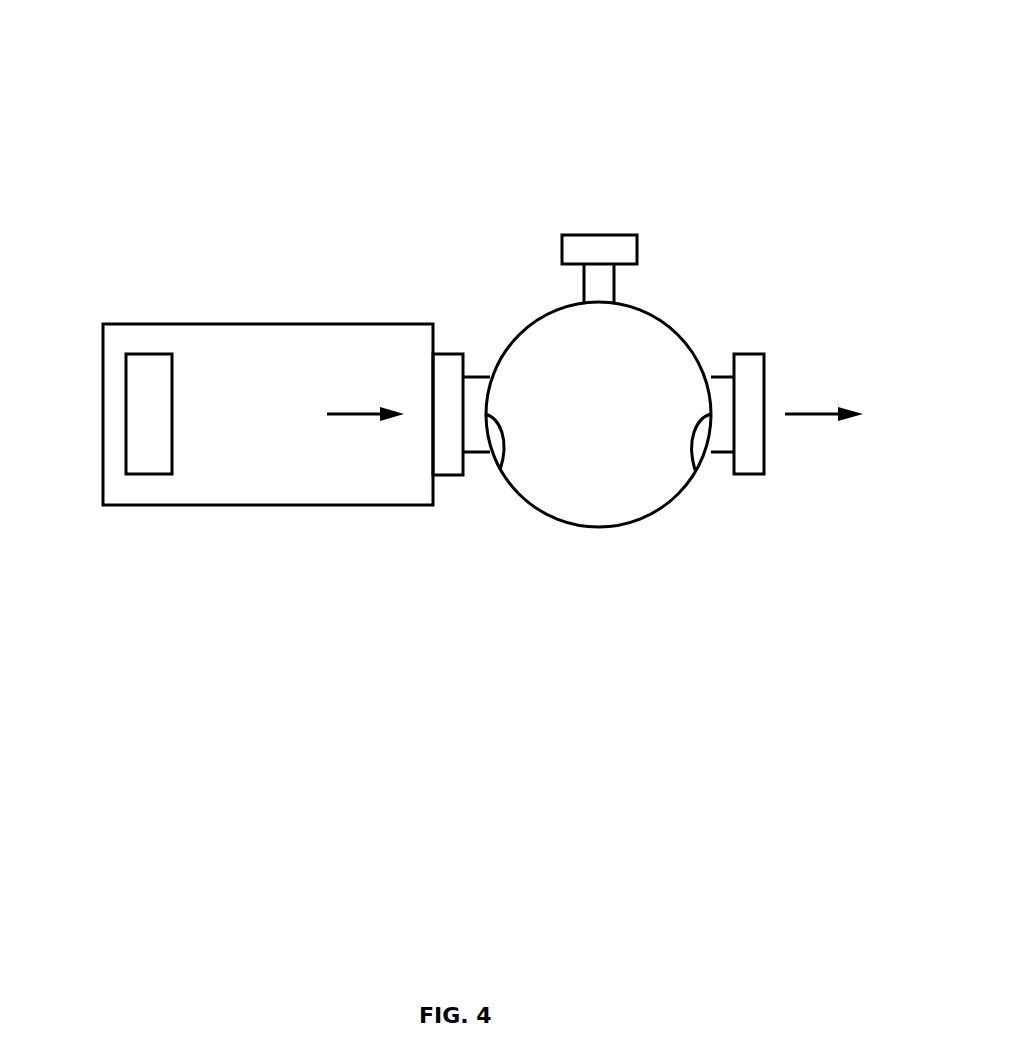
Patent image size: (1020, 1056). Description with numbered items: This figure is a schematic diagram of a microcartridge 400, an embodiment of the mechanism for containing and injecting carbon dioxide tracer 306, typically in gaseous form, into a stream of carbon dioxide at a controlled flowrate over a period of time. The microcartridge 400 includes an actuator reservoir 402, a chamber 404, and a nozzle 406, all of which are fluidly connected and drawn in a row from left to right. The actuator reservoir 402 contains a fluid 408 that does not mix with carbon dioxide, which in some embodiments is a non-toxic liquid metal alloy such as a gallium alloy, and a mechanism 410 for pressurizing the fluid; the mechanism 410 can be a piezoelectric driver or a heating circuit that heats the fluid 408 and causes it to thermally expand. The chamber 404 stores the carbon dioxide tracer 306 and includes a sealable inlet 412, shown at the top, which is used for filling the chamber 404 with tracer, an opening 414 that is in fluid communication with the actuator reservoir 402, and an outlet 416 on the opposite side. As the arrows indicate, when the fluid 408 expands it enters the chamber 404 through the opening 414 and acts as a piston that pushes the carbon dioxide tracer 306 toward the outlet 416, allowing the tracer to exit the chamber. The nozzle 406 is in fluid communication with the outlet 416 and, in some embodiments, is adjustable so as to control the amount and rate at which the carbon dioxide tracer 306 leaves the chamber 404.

The microcartridge 400 is at (613, 115).
The actuator reservoir 402 is at (223, 323).
The chamber 404 is at (530, 327).
The nozzle 406 is at (748, 354).
The fluid 408 is at (324, 413).
The mechanism for pressurizing the fluid 410 is at (146, 354).
The sealable inlet 412 is at (585, 233).
The opening 414 is at (500, 470).
The outlet 416 is at (695, 470).
The carbon dioxide tracer 306 is at (598, 414).